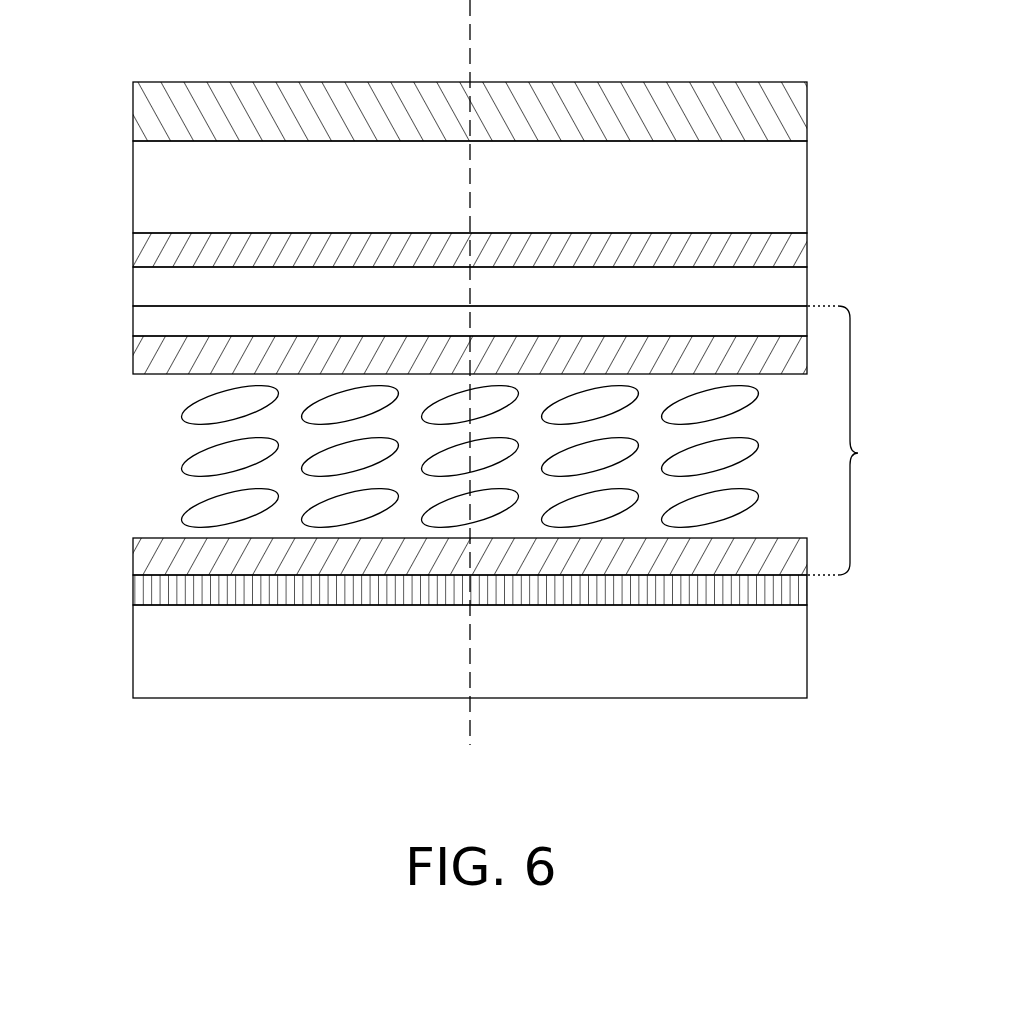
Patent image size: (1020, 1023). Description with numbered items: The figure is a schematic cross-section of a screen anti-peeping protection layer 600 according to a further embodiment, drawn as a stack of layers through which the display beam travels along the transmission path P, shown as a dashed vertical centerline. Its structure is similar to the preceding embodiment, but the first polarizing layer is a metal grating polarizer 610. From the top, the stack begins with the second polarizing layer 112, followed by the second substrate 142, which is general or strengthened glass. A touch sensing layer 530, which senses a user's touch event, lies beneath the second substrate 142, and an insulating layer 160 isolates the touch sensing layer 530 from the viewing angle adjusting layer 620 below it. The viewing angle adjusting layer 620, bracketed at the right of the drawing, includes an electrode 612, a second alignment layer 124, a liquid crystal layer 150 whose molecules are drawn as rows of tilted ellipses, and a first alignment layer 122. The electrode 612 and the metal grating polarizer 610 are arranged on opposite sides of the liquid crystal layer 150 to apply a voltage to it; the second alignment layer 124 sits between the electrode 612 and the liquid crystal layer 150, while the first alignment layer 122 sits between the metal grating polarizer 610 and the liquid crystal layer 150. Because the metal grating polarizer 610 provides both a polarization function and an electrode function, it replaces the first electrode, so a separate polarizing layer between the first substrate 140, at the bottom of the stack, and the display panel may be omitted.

The transmission path P is at (472, 30).
The second polarizing layer 112 is at (808, 110).
The second substrate 142 is at (808, 182).
The touch sensing layer 530 is at (808, 246).
The insulating layer 160 is at (808, 282).
The electrode 612 is at (133, 322).
The second alignment layer 124 is at (133, 356).
The liquid crystal layer 150 is at (127, 465).
The first alignment layer 122 is at (133, 557).
The metal grating polarizer 610 is at (133, 591).
The first substrate 140 is at (808, 650).
The viewing angle adjusting layer 620 is at (858, 440).
The screen anti-peeping protection layer 600 is at (806, 766).